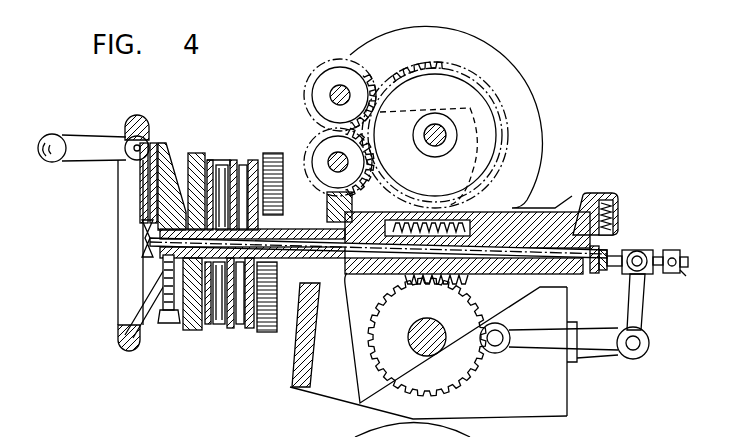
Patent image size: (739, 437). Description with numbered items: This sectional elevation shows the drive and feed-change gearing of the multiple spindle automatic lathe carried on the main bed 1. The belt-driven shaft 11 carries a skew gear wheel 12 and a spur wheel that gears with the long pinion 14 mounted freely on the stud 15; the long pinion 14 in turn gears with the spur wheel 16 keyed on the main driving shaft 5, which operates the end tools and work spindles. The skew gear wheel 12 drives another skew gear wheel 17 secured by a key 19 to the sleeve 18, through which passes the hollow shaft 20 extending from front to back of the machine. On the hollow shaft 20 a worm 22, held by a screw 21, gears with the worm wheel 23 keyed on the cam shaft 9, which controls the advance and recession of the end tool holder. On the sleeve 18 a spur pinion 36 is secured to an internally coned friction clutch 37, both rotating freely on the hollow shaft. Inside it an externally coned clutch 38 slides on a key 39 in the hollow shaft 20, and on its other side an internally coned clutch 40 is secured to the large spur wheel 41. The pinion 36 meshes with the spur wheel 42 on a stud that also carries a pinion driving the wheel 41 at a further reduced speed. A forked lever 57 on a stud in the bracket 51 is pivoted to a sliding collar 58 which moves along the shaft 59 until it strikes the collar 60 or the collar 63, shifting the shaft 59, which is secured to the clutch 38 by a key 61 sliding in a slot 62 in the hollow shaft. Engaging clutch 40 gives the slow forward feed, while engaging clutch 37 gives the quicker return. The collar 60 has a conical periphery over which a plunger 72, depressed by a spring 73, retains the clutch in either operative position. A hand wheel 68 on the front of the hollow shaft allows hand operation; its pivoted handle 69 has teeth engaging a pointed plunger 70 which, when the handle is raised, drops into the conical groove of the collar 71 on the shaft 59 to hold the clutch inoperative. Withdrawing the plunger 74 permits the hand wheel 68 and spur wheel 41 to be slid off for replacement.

The main bed 1 is at (548, 400).
The driving shaft 5 is at (452, 138).
The cam shaft 9 is at (420, 385).
The short longitudinal shaft 11 is at (330, 166).
The skew gear wheel 12 is at (330, 152).
The long pinion 14 is at (338, 70).
The short shaft or stud 15 is at (335, 92).
The spur wheel 16 is at (470, 85).
The skew gear wheel 17 is at (392, 222).
The sleeve 18 is at (306, 288).
The key 19 is at (464, 239).
The hollow shaft 20 is at (312, 300).
The screw 21 is at (400, 222).
The worm 22 is at (390, 272).
The worm wheel 23 is at (385, 342).
The spur pinion 36 is at (326, 200).
The internally coned friction clutch 37 is at (272, 152).
The externally coned clutch 38 is at (242, 163).
The key 39 is at (226, 163).
The internally coned clutch 40 is at (218, 182).
The large spur wheel 41 is at (198, 152).
The spur wheel 42 is at (268, 334).
The bracket 51 is at (540, 342).
The forked lever 57 is at (640, 318).
The sliding collar 58 is at (648, 252).
The shaft 59 is at (684, 252).
The collar 60 is at (605, 258).
The key 61 is at (197, 332).
The slot 62 is at (228, 330).
The collar 63 is at (676, 272).
The hand wheel 68 is at (116, 290).
The handle 69 is at (58, 157).
The pointed plunger 70 is at (140, 196).
The collar 71 is at (140, 241).
The plunger 72 is at (619, 216).
The spring 73 is at (612, 198).
The plunger 74 is at (166, 325).